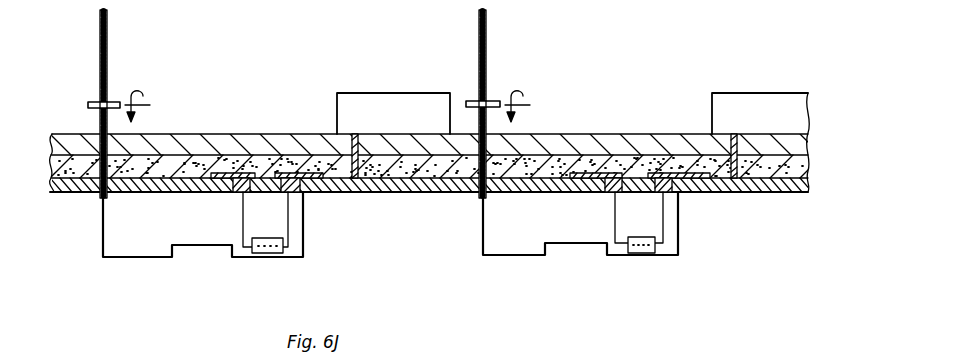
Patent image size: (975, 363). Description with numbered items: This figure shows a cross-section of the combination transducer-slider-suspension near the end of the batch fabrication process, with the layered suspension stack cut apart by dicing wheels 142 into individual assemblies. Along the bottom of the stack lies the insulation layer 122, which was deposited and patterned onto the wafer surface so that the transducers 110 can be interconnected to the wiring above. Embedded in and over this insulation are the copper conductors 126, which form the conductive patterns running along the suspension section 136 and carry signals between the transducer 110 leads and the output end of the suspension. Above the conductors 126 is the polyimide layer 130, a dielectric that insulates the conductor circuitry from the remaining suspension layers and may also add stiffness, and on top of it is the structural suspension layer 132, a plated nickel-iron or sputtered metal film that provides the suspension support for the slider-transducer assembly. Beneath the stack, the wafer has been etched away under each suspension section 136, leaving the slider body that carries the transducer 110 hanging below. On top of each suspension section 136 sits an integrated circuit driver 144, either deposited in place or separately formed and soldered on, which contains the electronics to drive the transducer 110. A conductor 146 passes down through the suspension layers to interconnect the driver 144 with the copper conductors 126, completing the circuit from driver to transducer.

The transducer 110 is at (278, 256).
The insulation layer 122 is at (72, 194).
The copper conductors 126 is at (328, 193).
The polyimide layer 130 is at (50, 170).
The structural suspension layer 132 is at (71, 145).
The suspension section 136 is at (312, 126).
The dicing wheel 142 is at (108, 58).
The integrated circuit driver 144 is at (381, 93).
The conductor 146 is at (355, 134).